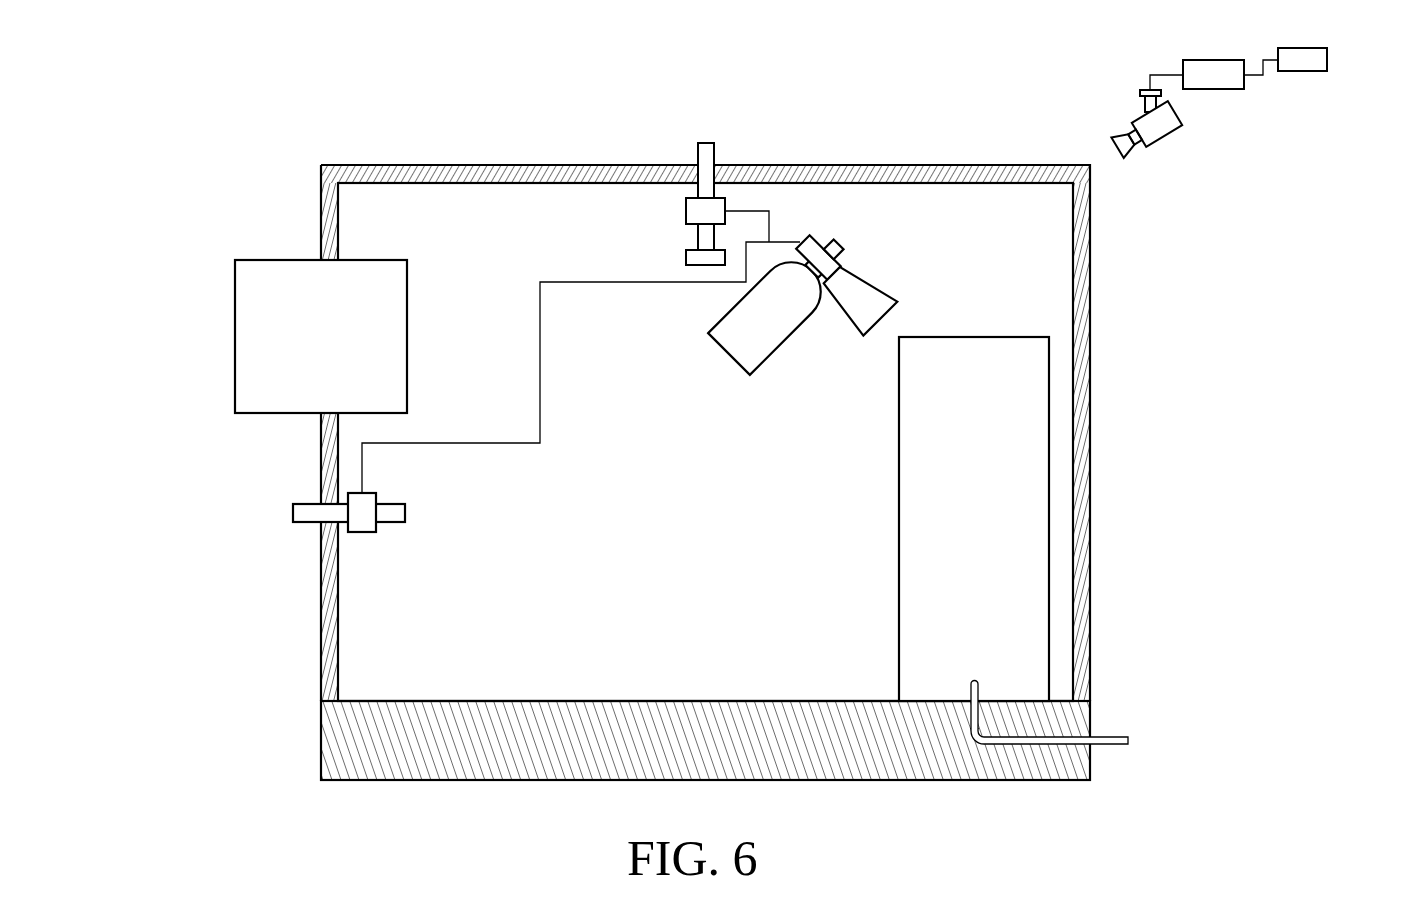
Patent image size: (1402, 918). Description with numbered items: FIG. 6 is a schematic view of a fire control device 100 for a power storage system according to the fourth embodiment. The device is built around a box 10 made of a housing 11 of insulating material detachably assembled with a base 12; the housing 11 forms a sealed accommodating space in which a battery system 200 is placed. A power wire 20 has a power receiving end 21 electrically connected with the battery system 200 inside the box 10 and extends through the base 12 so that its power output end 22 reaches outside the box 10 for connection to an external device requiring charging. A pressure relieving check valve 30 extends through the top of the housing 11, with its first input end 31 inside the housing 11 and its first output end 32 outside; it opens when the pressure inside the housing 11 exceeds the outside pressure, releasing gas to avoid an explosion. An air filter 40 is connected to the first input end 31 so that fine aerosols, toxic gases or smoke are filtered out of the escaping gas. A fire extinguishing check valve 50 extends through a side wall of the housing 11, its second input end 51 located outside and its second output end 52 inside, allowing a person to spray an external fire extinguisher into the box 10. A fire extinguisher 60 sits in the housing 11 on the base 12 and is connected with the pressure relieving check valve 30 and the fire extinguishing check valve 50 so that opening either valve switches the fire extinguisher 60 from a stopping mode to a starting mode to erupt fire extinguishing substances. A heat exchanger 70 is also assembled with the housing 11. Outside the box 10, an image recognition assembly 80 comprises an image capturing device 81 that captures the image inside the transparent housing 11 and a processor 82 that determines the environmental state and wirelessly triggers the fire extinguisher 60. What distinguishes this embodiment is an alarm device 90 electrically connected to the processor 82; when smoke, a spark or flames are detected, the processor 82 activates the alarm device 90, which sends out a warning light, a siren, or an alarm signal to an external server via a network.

The fire control device 100 is at (140, 84).
The box 10 is at (618, 484).
The housing 11 is at (322, 660).
The base 12 is at (343, 738).
The power wire 20 is at (1111, 664).
The power receiving end 21 is at (975, 678).
The power output end 22 is at (1123, 738).
The pressure relieving check valve 30 is at (637, 165).
The first input end 31 is at (697, 240).
The first output end 32 is at (700, 150).
The air filter 40 is at (687, 257).
The fire extinguishing check valve 50 is at (391, 570).
The second input end 51 is at (300, 513).
The second output end 52 is at (395, 515).
The fire extinguisher 60 is at (767, 340).
The heat exchanger 70 is at (257, 312).
The image recognition assembly 80 is at (1229, 110).
The image capturing device 81 is at (1158, 132).
The processor 82 is at (1233, 83).
The alarm device 90 is at (1318, 60).
The battery system 200 is at (988, 355).